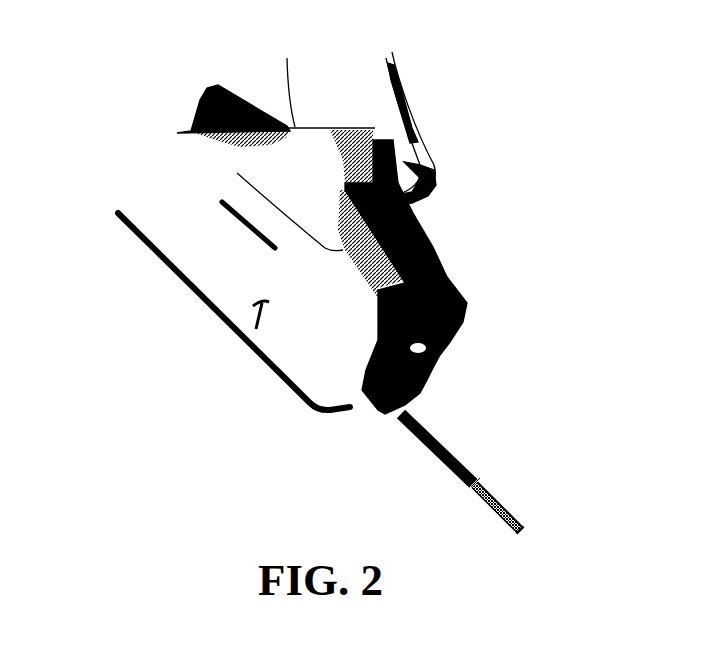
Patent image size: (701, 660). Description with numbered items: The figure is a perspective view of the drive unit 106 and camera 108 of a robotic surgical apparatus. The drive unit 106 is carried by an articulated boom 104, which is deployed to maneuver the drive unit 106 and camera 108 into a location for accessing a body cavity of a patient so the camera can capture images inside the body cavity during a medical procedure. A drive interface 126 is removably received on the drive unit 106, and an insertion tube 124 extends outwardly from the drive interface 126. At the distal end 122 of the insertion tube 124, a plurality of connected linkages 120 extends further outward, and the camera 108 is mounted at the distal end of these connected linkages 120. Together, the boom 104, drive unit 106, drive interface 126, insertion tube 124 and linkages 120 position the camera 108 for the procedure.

The articulated boom 104 is at (264, 78).
The drive unit 106 is at (128, 172).
The drive interface 126 is at (433, 374).
The insertion tube 124 is at (440, 465).
The connected linkages 120 is at (514, 500).
The distal end of insertion tube 122 is at (483, 504).
The camera 108 is at (526, 531).